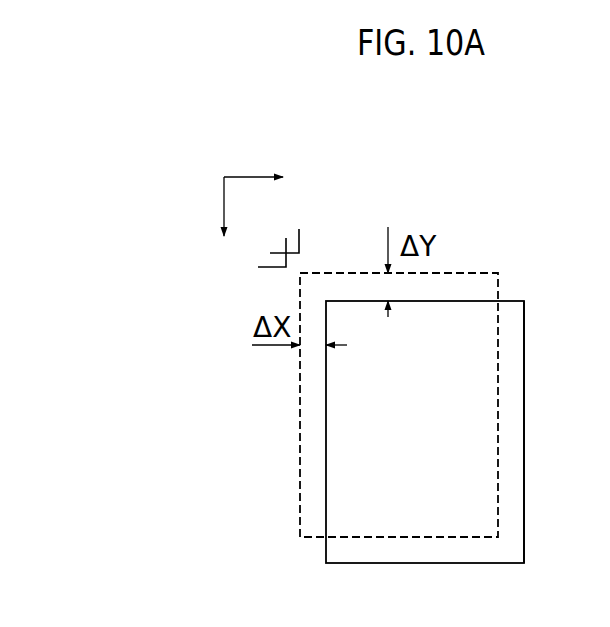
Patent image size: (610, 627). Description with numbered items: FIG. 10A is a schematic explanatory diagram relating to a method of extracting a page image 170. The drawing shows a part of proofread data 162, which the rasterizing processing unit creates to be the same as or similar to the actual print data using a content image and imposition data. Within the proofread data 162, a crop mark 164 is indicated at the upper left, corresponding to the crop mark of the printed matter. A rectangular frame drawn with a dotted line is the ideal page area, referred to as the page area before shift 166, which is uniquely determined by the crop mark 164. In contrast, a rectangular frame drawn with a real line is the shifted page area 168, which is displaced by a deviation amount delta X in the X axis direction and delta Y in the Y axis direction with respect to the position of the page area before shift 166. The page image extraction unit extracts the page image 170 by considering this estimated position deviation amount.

The proofread data 162 is at (172, 178).
The crop mark 164 is at (300, 243).
The page area before shift 166 is at (457, 272).
The shifted page area 168 is at (517, 297).
The page image 170 is at (512, 413).